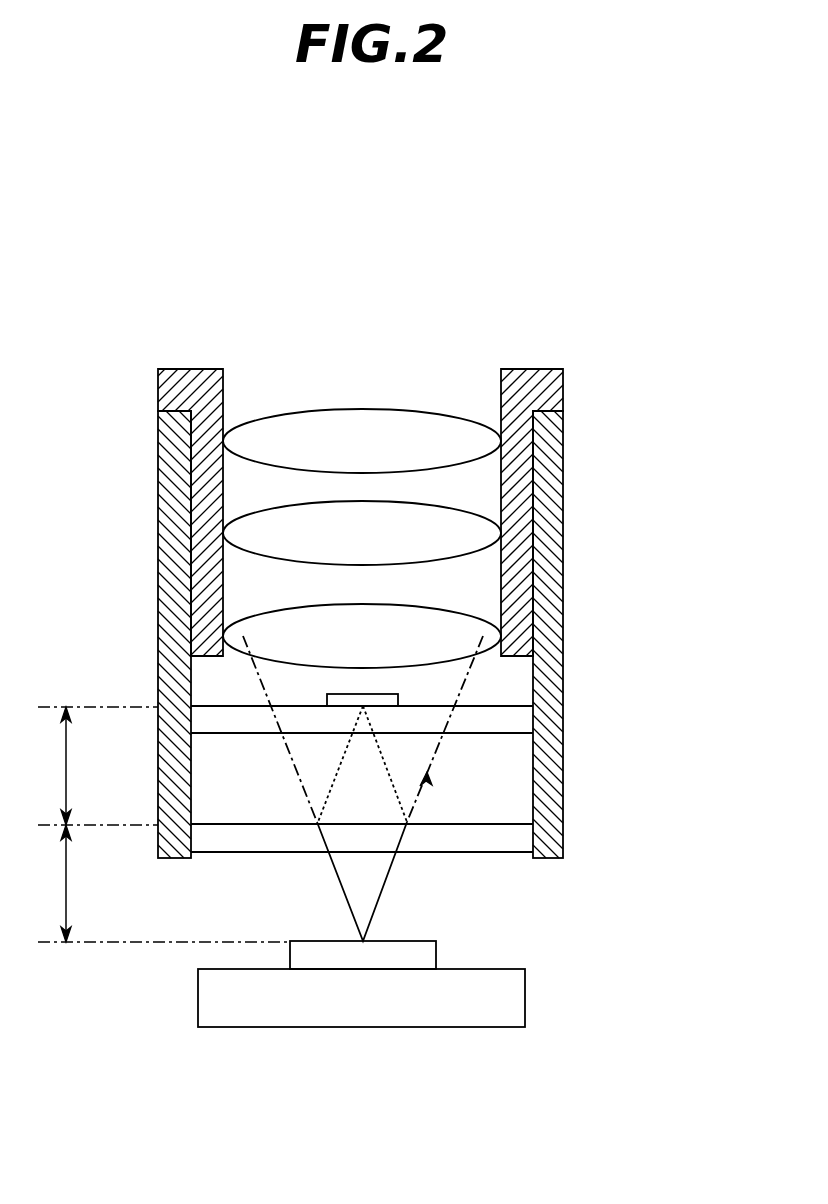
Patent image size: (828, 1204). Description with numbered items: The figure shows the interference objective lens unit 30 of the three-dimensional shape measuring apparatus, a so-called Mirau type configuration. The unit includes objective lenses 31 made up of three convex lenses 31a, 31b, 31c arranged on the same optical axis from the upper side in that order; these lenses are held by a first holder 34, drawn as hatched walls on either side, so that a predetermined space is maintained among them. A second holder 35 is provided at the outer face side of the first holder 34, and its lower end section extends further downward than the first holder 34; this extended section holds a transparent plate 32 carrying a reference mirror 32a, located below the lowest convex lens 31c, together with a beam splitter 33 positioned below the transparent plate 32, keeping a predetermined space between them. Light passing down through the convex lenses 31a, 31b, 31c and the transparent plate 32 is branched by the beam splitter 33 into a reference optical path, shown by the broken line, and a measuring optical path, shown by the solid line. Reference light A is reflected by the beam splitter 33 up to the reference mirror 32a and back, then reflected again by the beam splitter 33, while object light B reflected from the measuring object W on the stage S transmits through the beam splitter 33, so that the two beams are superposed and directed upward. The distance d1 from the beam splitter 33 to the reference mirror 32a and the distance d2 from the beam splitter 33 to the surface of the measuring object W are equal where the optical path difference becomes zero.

The interference objective lens unit 30 is at (397, 270).
The objective lenses 31 is at (471, 538).
The convex lens 31a is at (462, 456).
The convex lens 31b is at (466, 530).
The convex lens 31c is at (470, 620).
The transparent plate 32 is at (428, 688).
The reference mirror 32a is at (400, 697).
The beam splitter 33 is at (507, 840).
The first holder 34 is at (185, 392).
The second holder 35 is at (173, 475).
The reference light A is at (330, 782).
The object light B is at (336, 878).
The measuring object W is at (408, 958).
The stage S is at (493, 1003).
The distance d1 is at (98, 766).
The distance d2 is at (164, 883).